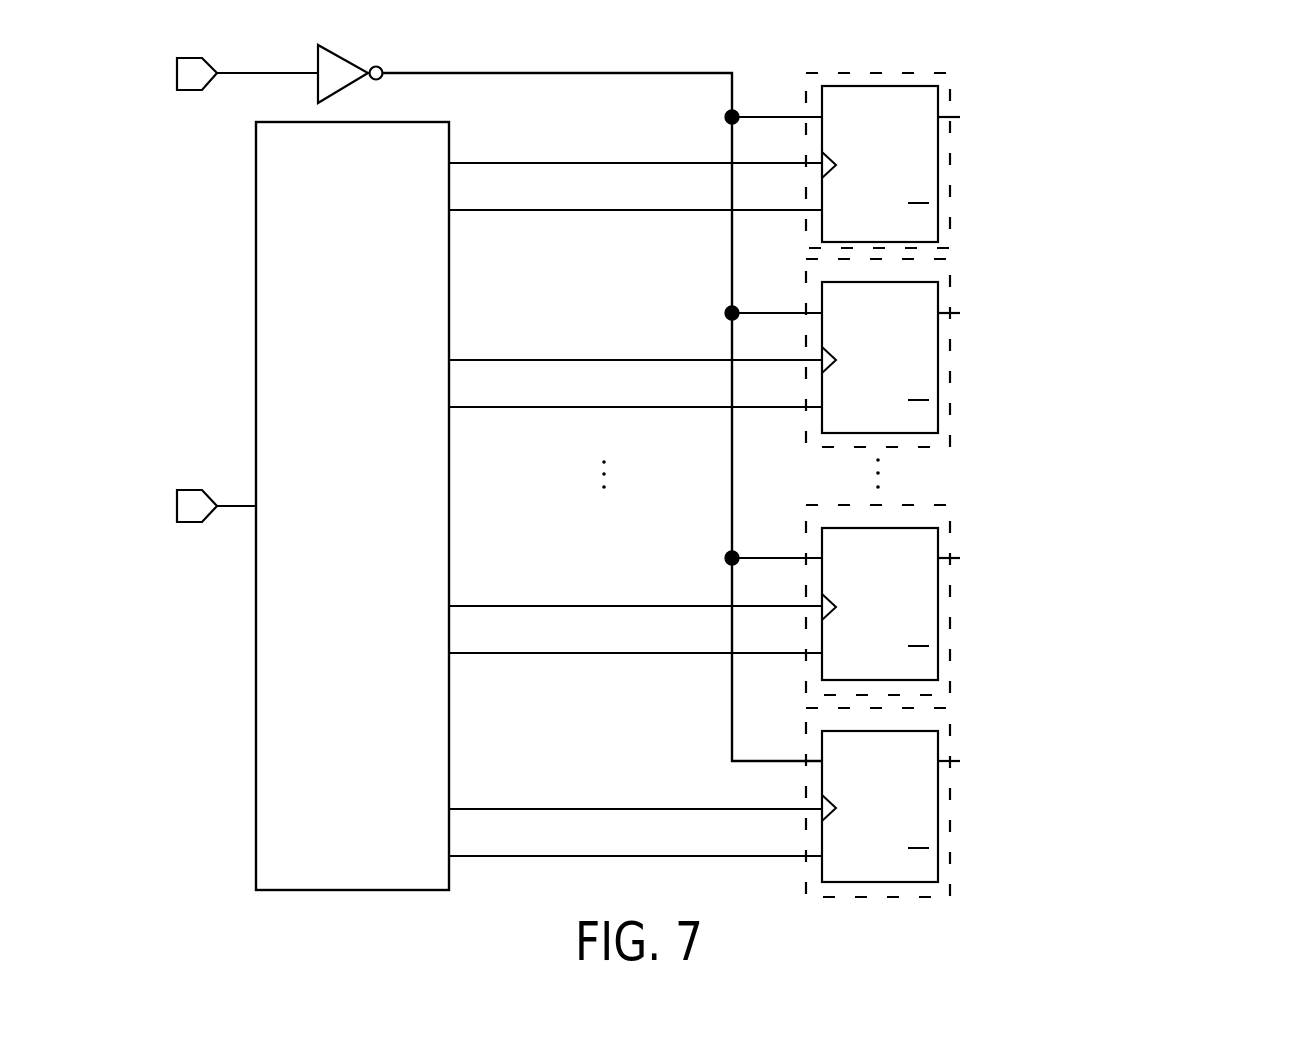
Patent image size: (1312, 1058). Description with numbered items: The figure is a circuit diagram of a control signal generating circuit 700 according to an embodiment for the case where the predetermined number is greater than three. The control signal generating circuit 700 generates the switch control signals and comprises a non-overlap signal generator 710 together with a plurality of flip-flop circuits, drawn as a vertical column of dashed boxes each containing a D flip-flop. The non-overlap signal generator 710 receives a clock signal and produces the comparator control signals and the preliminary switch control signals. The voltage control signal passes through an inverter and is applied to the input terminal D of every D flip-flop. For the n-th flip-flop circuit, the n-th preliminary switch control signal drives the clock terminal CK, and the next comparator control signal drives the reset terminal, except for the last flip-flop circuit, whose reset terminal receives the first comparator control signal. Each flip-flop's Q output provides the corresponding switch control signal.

The control signal generating circuit 700 is at (1156, 118).
The non-overlap signal generator 710 is at (405, 122).